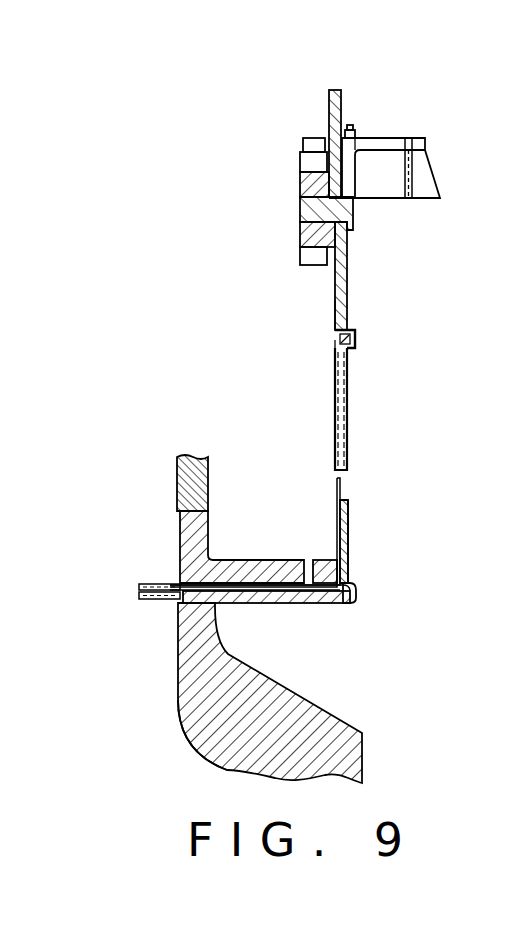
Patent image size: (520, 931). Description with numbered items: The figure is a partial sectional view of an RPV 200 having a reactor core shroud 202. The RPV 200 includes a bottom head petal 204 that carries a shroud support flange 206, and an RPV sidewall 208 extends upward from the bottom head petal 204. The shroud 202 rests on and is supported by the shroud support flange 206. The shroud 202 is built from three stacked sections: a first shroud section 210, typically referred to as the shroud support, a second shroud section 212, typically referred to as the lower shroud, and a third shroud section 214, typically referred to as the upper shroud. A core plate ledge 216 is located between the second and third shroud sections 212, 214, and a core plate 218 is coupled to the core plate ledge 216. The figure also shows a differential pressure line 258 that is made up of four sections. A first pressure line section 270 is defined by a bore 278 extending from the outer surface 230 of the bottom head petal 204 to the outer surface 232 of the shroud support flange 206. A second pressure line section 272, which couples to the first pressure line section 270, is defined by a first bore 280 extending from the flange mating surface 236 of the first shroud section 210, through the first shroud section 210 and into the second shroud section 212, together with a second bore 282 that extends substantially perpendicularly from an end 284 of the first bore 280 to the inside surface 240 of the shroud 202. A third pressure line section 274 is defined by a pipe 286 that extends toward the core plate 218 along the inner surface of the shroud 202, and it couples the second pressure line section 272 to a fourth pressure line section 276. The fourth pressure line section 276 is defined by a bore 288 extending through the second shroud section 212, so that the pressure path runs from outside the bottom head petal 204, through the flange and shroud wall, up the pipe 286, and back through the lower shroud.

The RPV 200 is at (300, 111).
The reactor core shroud 202 is at (364, 297).
The bottom head petal 204 is at (205, 740).
The shroud support flange 206 is at (357, 596).
The RPV sidewall 208 is at (176, 482).
The first shroud section 210 is at (349, 528).
The second shroud section 212 is at (347, 262).
The third shroud section 214 is at (342, 102).
The core plate ledge 216 is at (300, 212).
The core plate 218 is at (397, 138).
The outer surface 230 is at (177, 670).
The outer surface 232 is at (351, 588).
The flange mating surface 236 is at (327, 582).
The inside surface 240 is at (348, 372).
The differential pressure line 258 is at (240, 584).
The first pressure line section 270 is at (262, 601).
The second pressure line section 272 is at (341, 495).
The third pressure line section 274 is at (356, 340).
The fourth pressure line section 276 is at (335, 305).
The bore 278 is at (139, 593).
The first bore 280 is at (349, 556).
The second bore 282 is at (349, 352).
The end 284 is at (334, 348).
The pipe 286 is at (354, 331).
The bore 288 is at (334, 331).